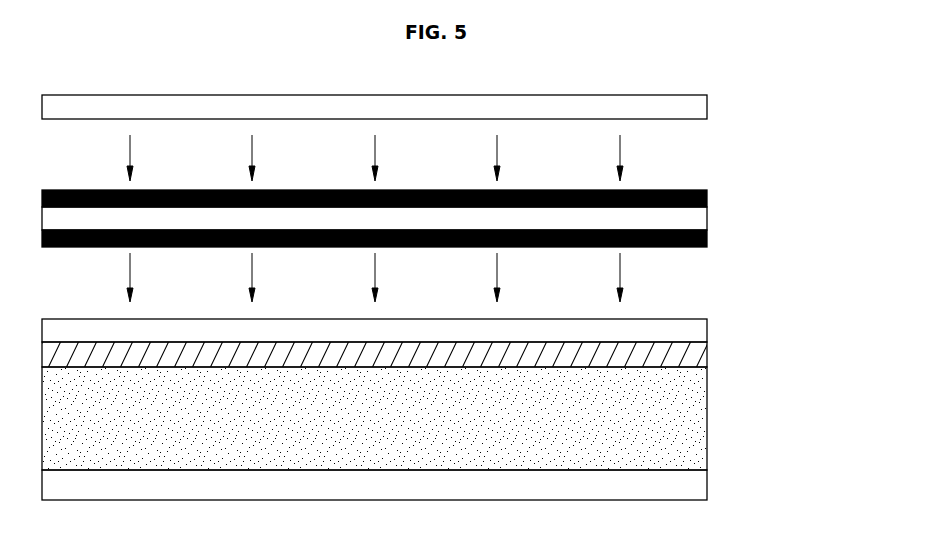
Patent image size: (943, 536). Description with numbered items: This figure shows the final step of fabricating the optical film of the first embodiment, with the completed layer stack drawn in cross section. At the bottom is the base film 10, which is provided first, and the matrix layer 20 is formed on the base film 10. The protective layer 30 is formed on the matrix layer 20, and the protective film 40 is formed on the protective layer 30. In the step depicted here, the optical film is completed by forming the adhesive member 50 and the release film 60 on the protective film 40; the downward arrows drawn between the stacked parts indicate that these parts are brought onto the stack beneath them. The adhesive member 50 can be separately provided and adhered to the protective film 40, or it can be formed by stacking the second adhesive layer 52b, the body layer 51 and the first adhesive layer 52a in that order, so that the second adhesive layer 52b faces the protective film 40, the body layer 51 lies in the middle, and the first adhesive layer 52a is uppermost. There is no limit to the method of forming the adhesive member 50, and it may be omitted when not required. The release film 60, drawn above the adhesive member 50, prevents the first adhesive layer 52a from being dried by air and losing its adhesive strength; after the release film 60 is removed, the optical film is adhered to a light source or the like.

The release film 60 is at (697, 106).
The adhesive member 50 is at (440, 216).
The first adhesive layer 52a is at (707, 199).
The body layer 51 is at (699, 218).
The second adhesive layer 52b is at (707, 238).
The protective film 40 is at (697, 330).
The protective layer 30 is at (697, 355).
The matrix layer 20 is at (697, 422).
The base film 10 is at (697, 485).